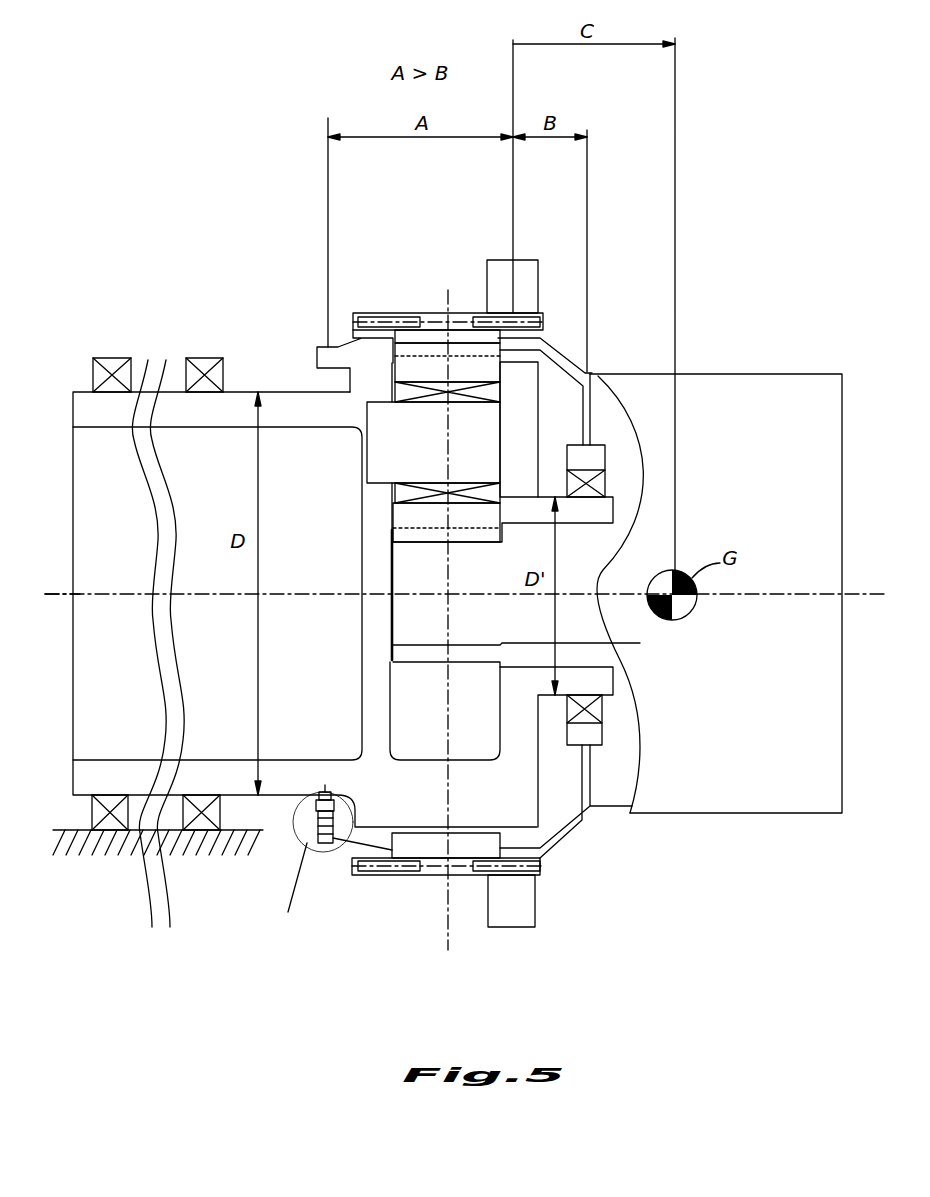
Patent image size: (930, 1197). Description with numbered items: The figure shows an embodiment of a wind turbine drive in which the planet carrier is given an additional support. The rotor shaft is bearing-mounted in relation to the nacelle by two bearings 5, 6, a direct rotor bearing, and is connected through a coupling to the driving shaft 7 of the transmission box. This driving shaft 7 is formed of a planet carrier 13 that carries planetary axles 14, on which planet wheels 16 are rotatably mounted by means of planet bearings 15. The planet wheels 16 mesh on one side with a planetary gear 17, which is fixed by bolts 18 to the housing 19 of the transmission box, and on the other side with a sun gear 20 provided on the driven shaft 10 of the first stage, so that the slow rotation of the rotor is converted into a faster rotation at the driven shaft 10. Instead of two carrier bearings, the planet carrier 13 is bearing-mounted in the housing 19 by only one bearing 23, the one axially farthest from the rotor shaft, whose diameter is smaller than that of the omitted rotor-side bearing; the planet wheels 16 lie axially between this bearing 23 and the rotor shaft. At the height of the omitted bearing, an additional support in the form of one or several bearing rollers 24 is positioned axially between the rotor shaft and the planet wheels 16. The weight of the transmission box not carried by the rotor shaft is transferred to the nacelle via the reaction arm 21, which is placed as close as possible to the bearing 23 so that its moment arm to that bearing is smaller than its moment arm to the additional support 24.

The bearing 5 is at (115, 363).
The bearing 6 is at (187, 365).
The driving shaft 7 is at (128, 200).
The driven shaft 10 is at (603, 567).
The planet carrier 13 is at (275, 395).
The planetary axles 14 is at (487, 427).
The planet bearings 15 is at (403, 490).
The planet wheels 16 is at (458, 375).
The planetary gear 17 is at (457, 332).
The bolts 18 is at (377, 867).
The housing 19 is at (327, 357).
The sun gear 20 is at (430, 655).
The reaction arm 21 is at (503, 287).
The bearing 23 is at (588, 460).
The bearing rollers 24 is at (317, 818).